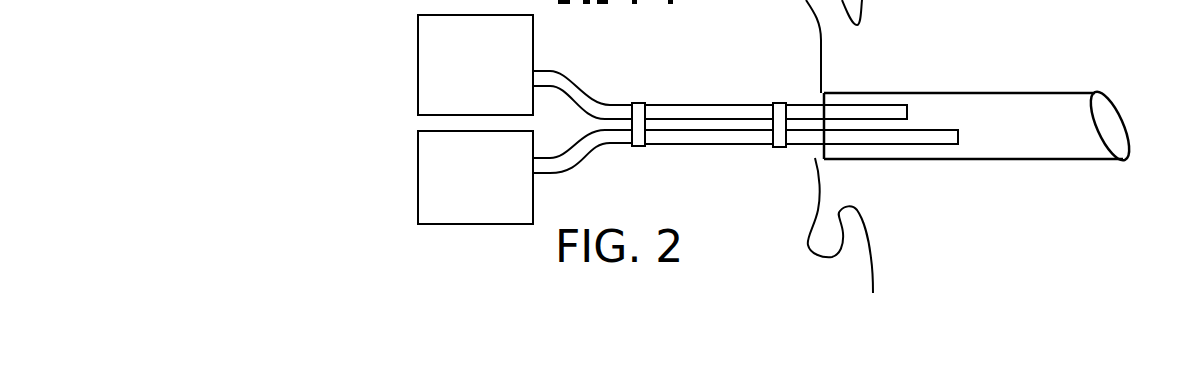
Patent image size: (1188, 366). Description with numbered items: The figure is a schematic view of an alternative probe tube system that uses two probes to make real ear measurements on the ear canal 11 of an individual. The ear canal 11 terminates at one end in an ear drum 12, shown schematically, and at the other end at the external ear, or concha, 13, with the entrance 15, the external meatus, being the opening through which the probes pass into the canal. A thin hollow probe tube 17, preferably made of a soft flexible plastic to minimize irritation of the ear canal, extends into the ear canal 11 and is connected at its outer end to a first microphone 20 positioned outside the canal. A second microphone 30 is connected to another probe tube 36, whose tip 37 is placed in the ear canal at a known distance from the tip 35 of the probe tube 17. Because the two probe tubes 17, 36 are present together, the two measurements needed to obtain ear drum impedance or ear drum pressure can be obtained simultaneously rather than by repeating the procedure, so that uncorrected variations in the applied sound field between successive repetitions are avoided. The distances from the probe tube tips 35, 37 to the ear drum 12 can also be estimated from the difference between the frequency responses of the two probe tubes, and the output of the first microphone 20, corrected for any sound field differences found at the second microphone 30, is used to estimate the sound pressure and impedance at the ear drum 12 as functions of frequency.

The ear canal 11 is at (1010, 92).
The ear drum 12 is at (1118, 130).
The external ear (concha) 13 is at (820, 90).
The entrance (external meatus) 15 is at (814, 160).
The probe tube 17 is at (667, 104).
The first microphone 20 is at (418, 73).
The second microphone 30 is at (418, 143).
The tip of probe tube 35 is at (908, 113).
The probe tube 36 is at (710, 146).
The tip of probe tube 37 is at (960, 137).